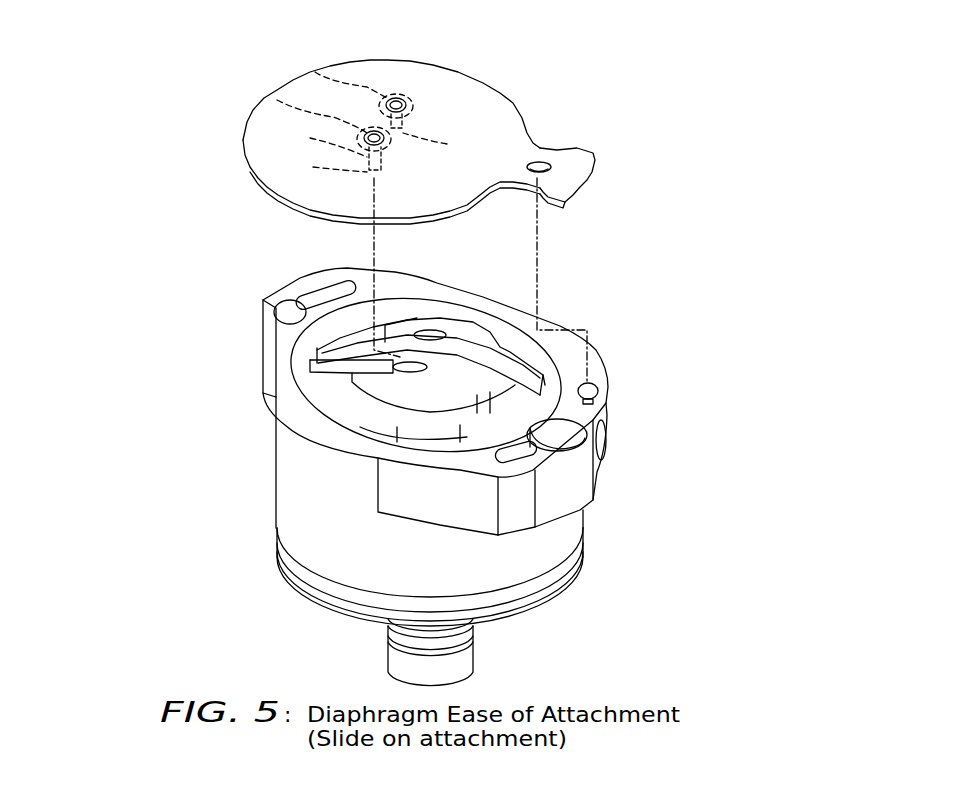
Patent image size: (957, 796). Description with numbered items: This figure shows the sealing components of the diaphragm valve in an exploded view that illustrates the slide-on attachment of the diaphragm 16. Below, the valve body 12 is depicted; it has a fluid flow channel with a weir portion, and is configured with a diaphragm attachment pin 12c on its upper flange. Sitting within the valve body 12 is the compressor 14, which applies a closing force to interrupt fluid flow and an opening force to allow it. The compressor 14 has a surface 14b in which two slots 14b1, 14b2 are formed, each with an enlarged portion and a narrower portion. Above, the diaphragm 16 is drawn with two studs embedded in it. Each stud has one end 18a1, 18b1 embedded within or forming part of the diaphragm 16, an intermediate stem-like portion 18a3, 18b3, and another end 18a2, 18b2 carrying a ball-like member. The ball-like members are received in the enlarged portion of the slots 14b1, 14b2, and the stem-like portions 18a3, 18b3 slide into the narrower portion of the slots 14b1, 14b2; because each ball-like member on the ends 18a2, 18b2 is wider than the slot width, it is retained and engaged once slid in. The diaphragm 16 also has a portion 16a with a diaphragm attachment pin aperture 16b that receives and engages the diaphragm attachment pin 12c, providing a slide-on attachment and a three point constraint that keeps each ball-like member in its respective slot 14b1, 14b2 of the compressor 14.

The valve body 12 is at (320, 553).
The diaphragm attachment pin 12c is at (590, 384).
The compressor 14 is at (397, 417).
The surface 14b is at (407, 372).
The slot 14b1 is at (432, 333).
The slot 14b2 is at (410, 363).
The diaphragm 16 is at (380, 77).
The portion 16a is at (580, 151).
The diaphragm attachment pin aperture 16b is at (539, 162).
The end 18a1 is at (275, 98).
The end 18a2 is at (312, 168).
The intermediate stem-like portion 18a3 is at (311, 140).
The end 18b1 is at (315, 72).
The end 18b2 is at (450, 148).
The intermediate stem-like portion 18b3 is at (407, 115).